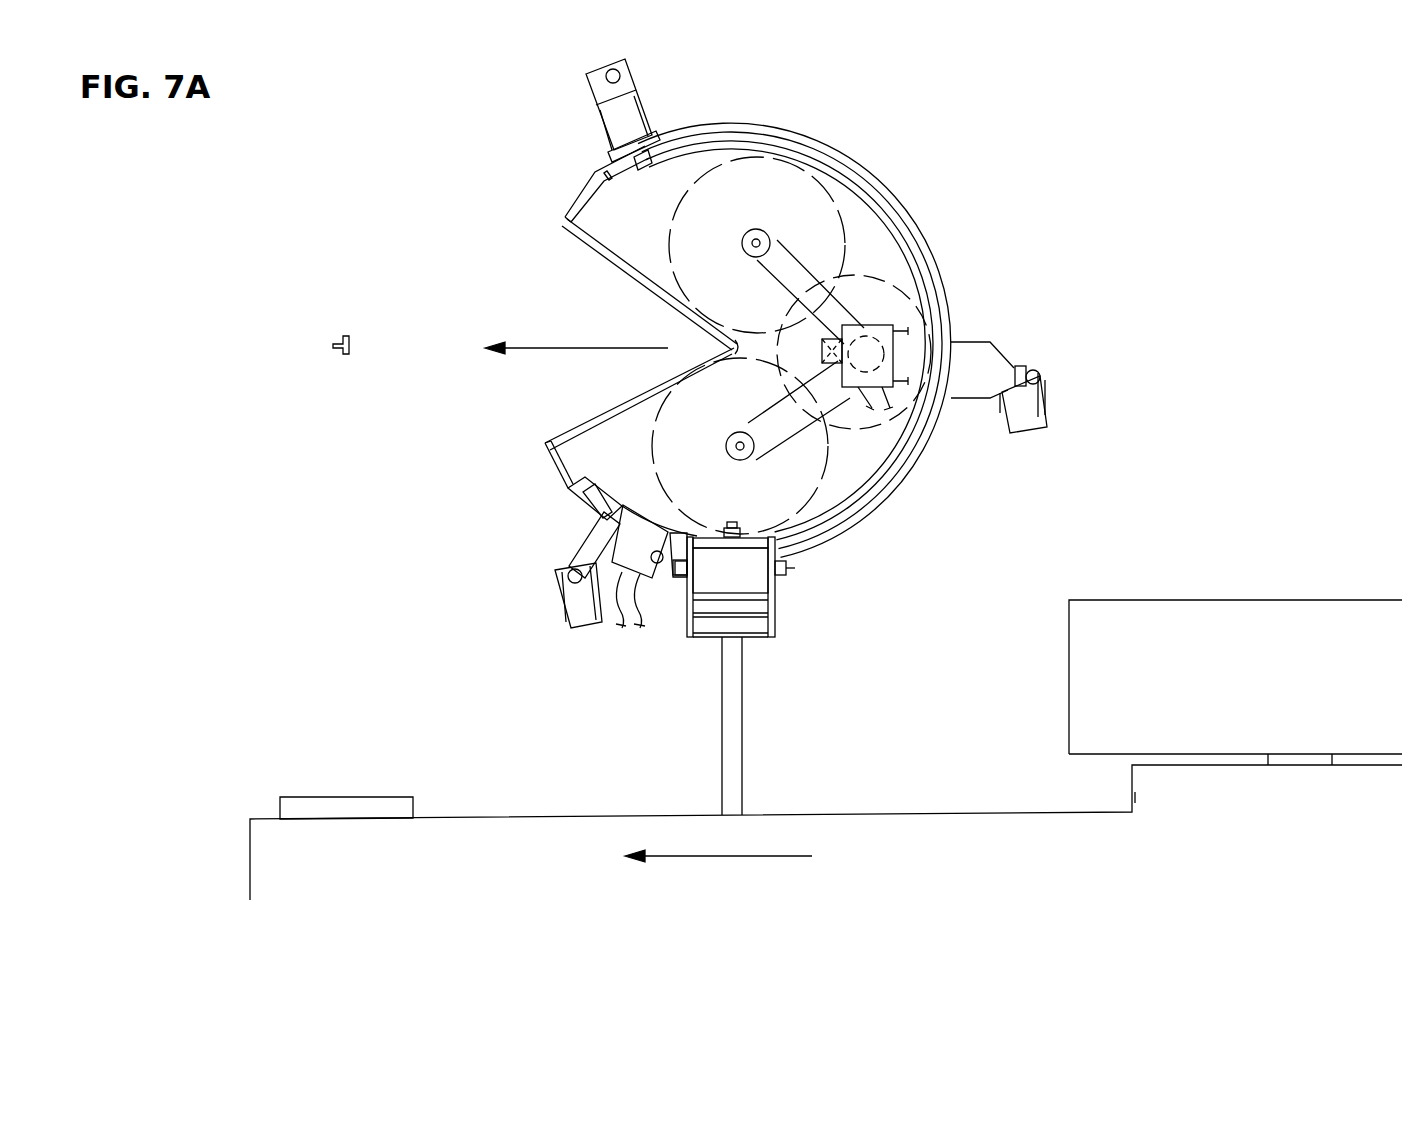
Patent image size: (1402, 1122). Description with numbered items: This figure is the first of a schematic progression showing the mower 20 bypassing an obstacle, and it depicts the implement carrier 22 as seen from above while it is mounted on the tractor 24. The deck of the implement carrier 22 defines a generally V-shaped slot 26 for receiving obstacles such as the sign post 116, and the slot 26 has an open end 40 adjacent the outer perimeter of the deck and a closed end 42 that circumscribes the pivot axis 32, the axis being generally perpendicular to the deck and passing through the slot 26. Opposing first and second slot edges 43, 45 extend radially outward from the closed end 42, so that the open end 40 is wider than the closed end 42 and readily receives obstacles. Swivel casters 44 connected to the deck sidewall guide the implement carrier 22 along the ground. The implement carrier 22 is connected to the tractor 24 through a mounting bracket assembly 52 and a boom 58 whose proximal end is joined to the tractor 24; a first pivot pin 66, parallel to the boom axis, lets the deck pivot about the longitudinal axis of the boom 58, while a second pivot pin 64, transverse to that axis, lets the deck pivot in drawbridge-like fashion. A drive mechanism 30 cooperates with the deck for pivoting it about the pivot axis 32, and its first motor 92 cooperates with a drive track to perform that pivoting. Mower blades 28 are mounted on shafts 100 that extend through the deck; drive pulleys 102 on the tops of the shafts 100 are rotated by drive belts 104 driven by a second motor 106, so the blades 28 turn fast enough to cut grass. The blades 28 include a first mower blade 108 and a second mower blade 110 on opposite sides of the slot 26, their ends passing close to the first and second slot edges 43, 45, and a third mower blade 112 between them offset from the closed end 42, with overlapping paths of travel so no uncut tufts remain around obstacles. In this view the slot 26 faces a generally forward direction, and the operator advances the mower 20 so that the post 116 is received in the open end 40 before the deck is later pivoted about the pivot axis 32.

The mower 20 is at (202, 720).
The implement carrier 22 is at (778, 320).
The tractor 24 is at (250, 853).
The slot 26 is at (508, 414).
The mower blades 28 is at (673, 234).
The drive mechanism 30 is at (643, 575).
The pivot axis 32 is at (732, 348).
The open end 40 is at (563, 218).
The closed end 42 is at (742, 349).
The first slot edge 43 is at (620, 262).
The swivel casters 44 is at (637, 90).
The second slot edge 45 is at (588, 426).
The mounting bracket assembly 52 is at (776, 612).
The boom 58 is at (722, 748).
The second pivot pin 64 is at (795, 569).
The first pivot pin 66 is at (732, 522).
The first motor 92 is at (614, 560).
The shafts 100 is at (757, 238).
The drive pulleys 102 is at (742, 250).
The drive belts 104 is at (790, 290).
The second motor 106 is at (878, 327).
The first mower blade 108 is at (781, 155).
The second mower blade 110 is at (828, 487).
The third mower blade 112 is at (940, 328).
The sign post 116 is at (345, 360).